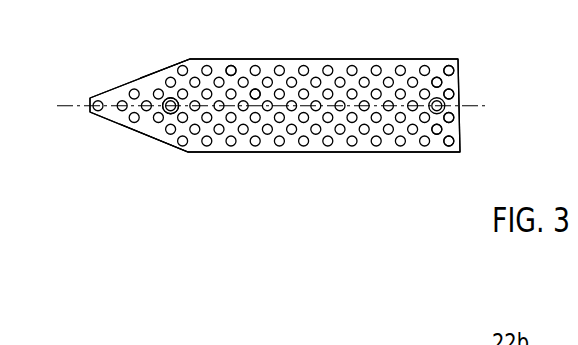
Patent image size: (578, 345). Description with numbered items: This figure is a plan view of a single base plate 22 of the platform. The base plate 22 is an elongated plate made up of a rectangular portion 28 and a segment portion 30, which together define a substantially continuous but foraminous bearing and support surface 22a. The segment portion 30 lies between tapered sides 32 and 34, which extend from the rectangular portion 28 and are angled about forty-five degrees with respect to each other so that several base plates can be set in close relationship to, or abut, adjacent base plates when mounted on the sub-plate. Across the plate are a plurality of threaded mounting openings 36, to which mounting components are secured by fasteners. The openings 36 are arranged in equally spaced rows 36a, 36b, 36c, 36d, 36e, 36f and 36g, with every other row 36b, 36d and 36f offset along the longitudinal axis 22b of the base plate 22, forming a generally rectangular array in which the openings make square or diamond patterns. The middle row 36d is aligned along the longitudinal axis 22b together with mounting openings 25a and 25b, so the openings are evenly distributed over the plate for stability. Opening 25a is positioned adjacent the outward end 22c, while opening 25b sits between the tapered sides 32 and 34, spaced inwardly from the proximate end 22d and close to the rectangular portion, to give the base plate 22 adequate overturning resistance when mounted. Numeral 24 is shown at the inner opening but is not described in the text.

The base plate 22 is at (353, 38).
The bearing and support surface 22a is at (340, 150).
The longitudinal axis 22b is at (63, 104).
The outward end 22c is at (418, 58).
The proximate end 22d is at (134, 80).
The pivot opening 24 is at (165, 113).
The mounting opening 25a is at (434, 112).
The mounting opening 25b is at (167, 144).
The rectangular portion 28 is at (295, 59).
The segment portion 30 is at (118, 125).
The tapered side 32 is at (164, 68).
The tapered side 34 is at (134, 133).
The threaded mounting openings 36 is at (253, 90).
The row of mounting openings 36a is at (452, 66).
The offset row of mounting openings 36b is at (452, 78).
The row of mounting openings 36c is at (453, 93).
The middle row of mounting openings 36d is at (98, 100).
The row of mounting openings 36e is at (453, 118).
The offset row of mounting openings 36f is at (454, 131).
The row of mounting openings 36g is at (458, 150).